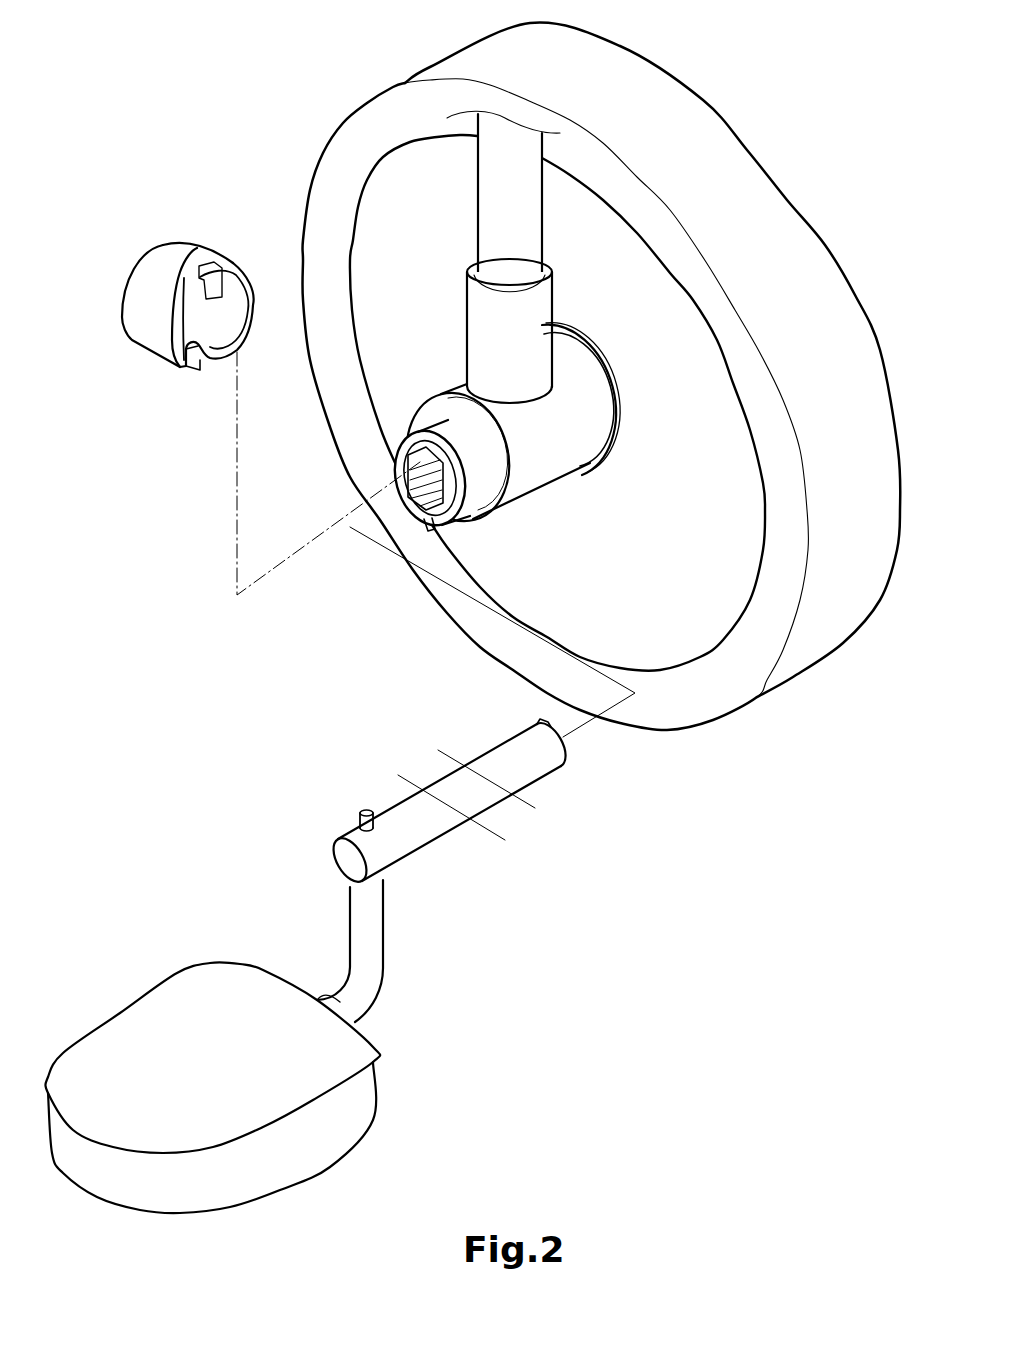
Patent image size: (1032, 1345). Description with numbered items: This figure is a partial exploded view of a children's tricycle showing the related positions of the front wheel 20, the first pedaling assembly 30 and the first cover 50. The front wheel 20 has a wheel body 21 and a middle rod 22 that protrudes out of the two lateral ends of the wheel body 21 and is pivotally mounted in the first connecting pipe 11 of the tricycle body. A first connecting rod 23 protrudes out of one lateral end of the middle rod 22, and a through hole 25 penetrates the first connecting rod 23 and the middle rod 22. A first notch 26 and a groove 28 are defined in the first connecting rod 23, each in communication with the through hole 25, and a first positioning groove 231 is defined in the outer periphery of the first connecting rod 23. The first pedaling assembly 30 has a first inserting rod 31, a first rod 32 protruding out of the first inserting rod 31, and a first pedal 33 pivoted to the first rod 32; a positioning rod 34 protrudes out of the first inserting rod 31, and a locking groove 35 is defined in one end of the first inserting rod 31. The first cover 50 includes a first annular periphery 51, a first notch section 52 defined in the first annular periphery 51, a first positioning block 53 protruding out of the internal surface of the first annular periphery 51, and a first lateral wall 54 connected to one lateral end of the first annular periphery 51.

The first connecting pipe 11 is at (480, 452).
The front wheel 20 is at (601, 409).
The wheel body 21 is at (753, 660).
The middle rod 22 is at (598, 372).
The first connecting rod 23 is at (446, 505).
The first positioning groove 231 is at (393, 457).
The through hole 25 is at (417, 470).
The first notch 26 is at (440, 537).
The groove 28 is at (417, 450).
The first pedaling assembly 30 is at (373, 935).
The first inserting rod 31 is at (437, 827).
The first rod 32 is at (375, 950).
The first pedal 33 is at (205, 975).
The positioning rod 34 is at (362, 812).
The locking groove 35 is at (541, 727).
The first cover 50 is at (155, 300).
The first annular periphery 51 is at (175, 332).
The first notch section 52 is at (195, 366).
The first positioning block 53 is at (210, 283).
The first lateral wall 54 is at (138, 270).